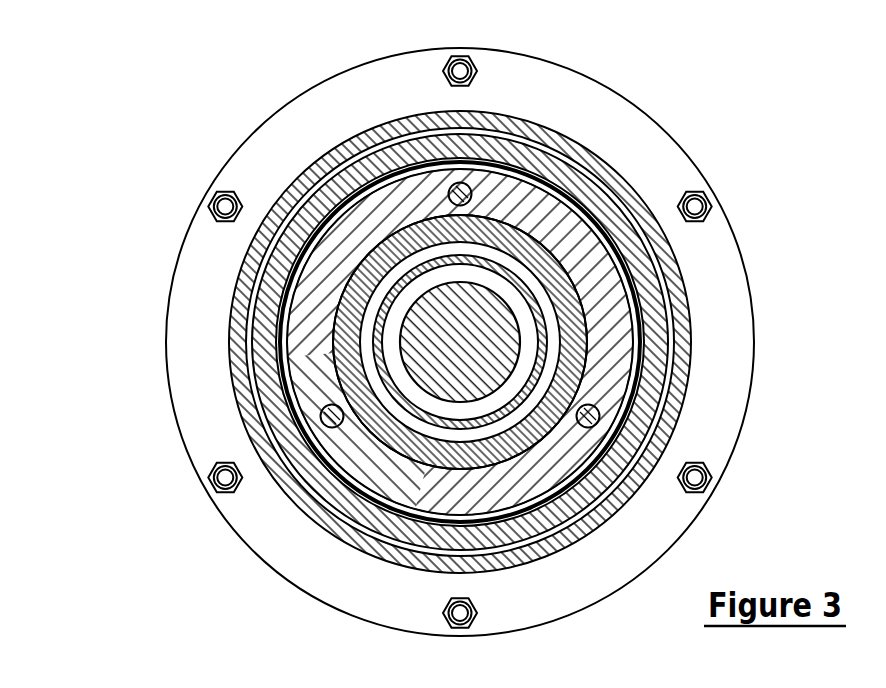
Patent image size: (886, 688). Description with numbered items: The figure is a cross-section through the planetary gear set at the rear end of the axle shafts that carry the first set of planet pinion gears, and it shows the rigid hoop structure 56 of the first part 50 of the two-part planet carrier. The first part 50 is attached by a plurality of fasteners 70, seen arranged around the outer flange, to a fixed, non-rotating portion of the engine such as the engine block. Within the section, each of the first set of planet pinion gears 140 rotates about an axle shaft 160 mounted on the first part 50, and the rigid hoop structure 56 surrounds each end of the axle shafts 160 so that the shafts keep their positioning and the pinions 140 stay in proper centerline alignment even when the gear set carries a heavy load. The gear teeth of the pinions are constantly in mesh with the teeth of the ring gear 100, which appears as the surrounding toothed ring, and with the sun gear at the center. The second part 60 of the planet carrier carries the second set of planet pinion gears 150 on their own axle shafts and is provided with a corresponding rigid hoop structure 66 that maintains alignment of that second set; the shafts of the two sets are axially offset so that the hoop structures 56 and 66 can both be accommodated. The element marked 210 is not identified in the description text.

The first part of planet carrier 50 is at (511, 196).
The rigid hoop structure 56 is at (408, 203).
The second part of planet carrier 60 is at (585, 317).
The rigid hoop structure 66 is at (556, 292).
The fasteners 70 is at (477, 63).
The ring gear 100 is at (571, 180).
The first set of planet pinion gears 140 is at (458, 183).
The second set of planet pinion gears 150 is at (303, 263).
The axle shaft 160 is at (460, 183).
The flange 210 is at (285, 130).